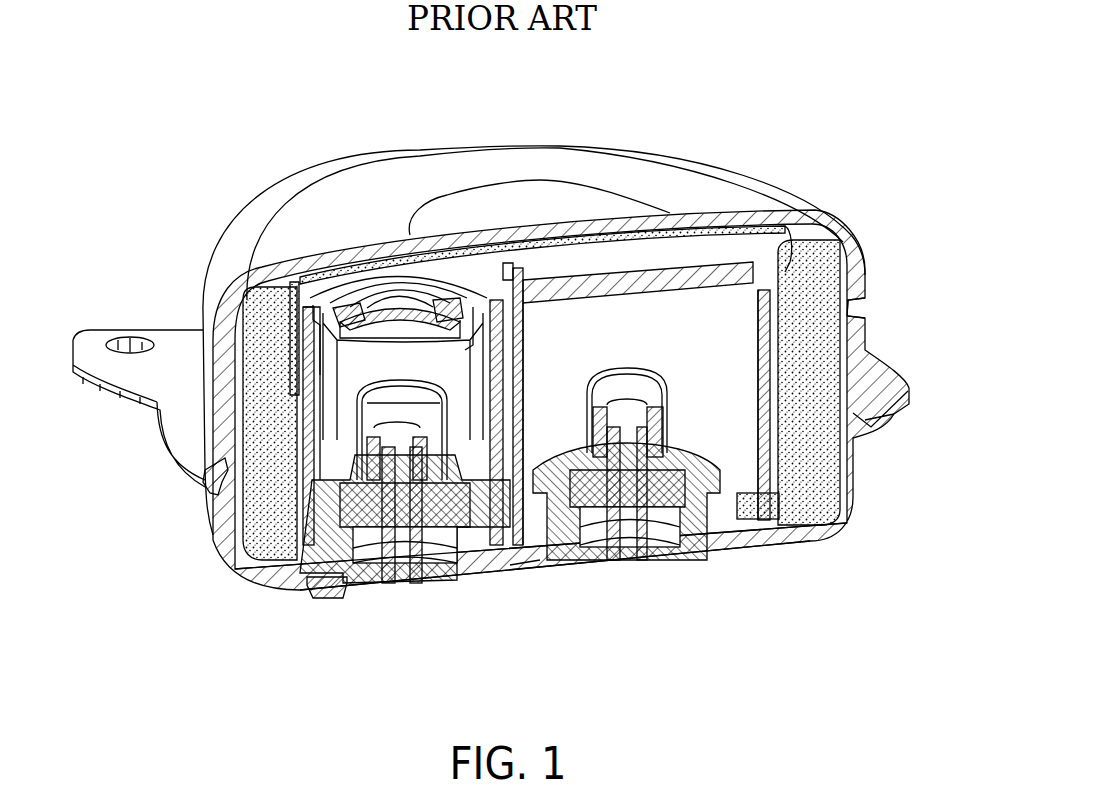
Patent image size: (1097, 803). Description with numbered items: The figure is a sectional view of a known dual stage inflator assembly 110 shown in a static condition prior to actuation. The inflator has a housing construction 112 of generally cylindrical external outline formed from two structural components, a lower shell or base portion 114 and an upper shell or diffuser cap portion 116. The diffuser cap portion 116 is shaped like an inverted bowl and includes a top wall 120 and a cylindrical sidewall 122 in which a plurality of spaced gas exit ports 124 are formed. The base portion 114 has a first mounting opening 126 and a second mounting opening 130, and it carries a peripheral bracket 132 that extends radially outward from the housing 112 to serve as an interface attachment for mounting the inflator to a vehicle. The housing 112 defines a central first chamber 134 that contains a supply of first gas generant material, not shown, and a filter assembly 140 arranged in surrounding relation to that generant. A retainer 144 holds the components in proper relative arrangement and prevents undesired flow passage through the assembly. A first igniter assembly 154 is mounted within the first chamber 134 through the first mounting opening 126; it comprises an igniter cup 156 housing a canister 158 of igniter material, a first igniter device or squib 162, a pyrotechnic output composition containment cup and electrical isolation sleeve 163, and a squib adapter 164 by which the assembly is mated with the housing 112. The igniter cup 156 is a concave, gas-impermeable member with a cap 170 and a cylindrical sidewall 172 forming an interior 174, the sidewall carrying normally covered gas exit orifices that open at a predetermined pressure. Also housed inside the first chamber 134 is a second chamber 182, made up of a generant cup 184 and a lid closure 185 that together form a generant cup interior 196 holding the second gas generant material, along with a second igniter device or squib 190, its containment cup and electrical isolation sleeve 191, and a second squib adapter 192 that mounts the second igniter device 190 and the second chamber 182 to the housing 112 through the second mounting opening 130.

The dual stage inflator assembly 110 is at (684, 100).
The housing construction 112 is at (869, 234).
The base portion 114 is at (275, 583).
The diffuser cap portion 116 is at (247, 297).
The top wall 120 is at (538, 147).
The cylindrical sidewall 122 is at (225, 445).
The gas exit ports 124 is at (861, 307).
The first mounting opening 126 is at (313, 587).
The second mounting opening 130 is at (533, 567).
The peripheral bracket 132 is at (167, 333).
The first chamber 134 is at (820, 455).
The filter assembly 140 is at (273, 530).
The retainer 144 is at (822, 240).
The first igniter assembly 154 is at (386, 621).
The igniter cup 156 is at (420, 292).
The canister 158 is at (400, 327).
The first igniter device 162 is at (420, 432).
The pyrotechnic output composition containment cup and electrical isolation sleeve 163 is at (363, 410).
The squib adapter 164 is at (468, 548).
The cap 170 is at (362, 320).
The cylindrical sidewall 172 is at (307, 440).
The interior 174 is at (407, 330).
The second chamber 182 is at (732, 410).
The generant cup 184 is at (762, 350).
The lid closure 185 is at (683, 283).
The second igniter device 190 is at (613, 597).
The pyrotechnic output composition containment cup and electrical isolation sleeve 191 is at (655, 365).
The second squib adapter 192 is at (683, 560).
The generant cup interior 196 is at (700, 420).